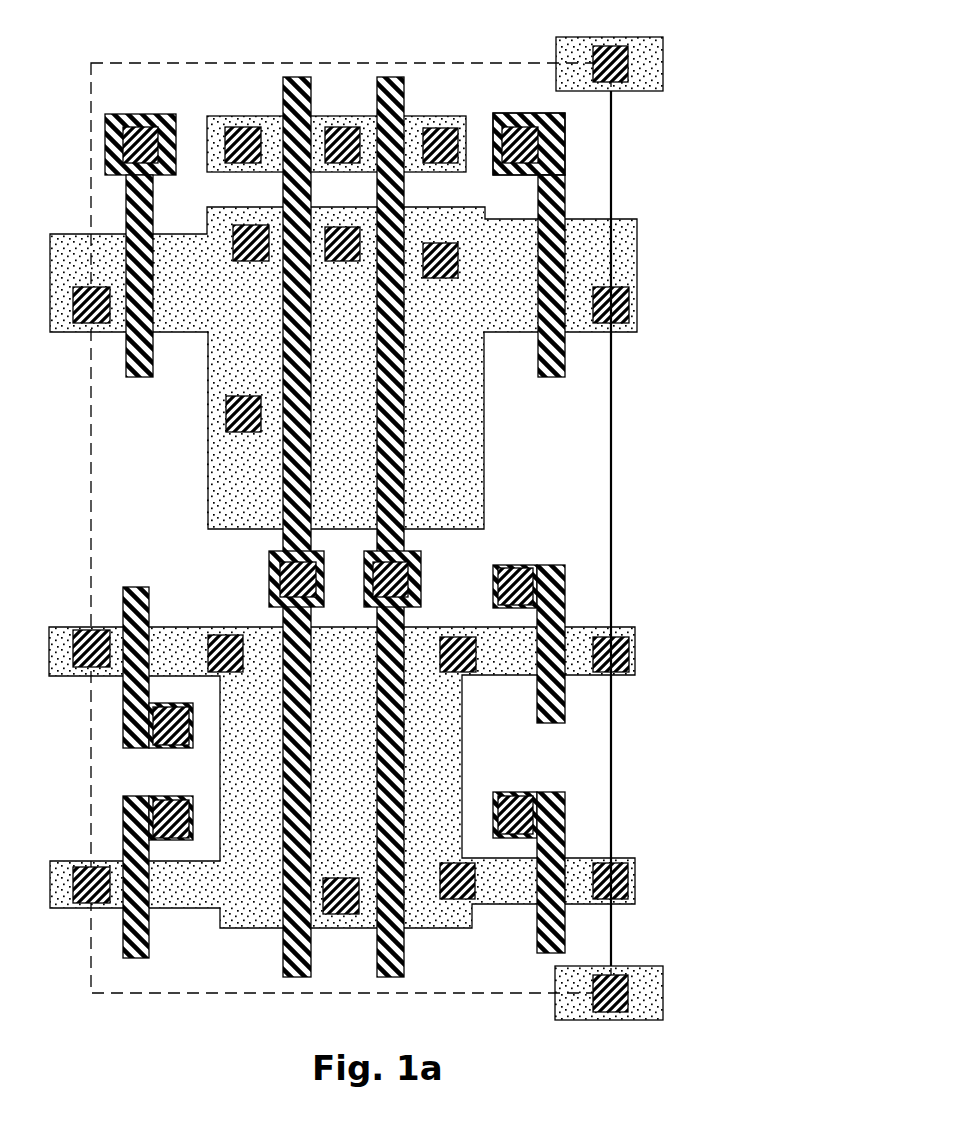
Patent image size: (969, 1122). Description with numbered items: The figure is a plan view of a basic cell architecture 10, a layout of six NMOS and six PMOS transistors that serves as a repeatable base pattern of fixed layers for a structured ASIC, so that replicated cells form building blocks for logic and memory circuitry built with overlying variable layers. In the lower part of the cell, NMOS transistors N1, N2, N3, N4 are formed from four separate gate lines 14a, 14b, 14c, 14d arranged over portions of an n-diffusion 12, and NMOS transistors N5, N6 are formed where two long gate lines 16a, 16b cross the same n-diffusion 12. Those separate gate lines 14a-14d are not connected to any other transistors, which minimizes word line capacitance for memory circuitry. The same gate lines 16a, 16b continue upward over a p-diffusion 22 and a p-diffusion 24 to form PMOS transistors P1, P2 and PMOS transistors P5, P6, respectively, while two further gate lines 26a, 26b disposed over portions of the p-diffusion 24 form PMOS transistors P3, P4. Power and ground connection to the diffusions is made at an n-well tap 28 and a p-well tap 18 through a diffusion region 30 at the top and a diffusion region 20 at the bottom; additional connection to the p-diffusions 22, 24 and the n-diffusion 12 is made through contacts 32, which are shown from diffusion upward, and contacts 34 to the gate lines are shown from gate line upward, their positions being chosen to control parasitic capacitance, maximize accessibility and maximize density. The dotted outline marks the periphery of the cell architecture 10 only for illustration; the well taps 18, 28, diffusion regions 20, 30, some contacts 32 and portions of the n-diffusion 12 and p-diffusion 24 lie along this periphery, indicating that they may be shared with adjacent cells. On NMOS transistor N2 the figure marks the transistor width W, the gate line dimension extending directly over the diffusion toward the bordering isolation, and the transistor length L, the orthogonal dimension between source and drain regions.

The basic cell architecture 10 is at (736, 46).
The n-diffusion 12 is at (440, 716).
The gate line 14a is at (137, 616).
The gate line 14b is at (555, 697).
The gate line 14c is at (137, 875).
The gate line 14d is at (552, 872).
The gate line 16a is at (312, 373).
The gate line 16b is at (404, 380).
The p-well tap 18 is at (637, 963).
The diffusion region 20 is at (662, 993).
The p-diffusion 22 is at (320, 120).
The p-diffusion 24 is at (466, 465).
The gate line 26a is at (153, 276).
The gate line 26b is at (550, 253).
The n-well tap 28 is at (627, 65).
The diffusion region 30 is at (645, 72).
The contacts 32 is at (629, 305).
The contacts 34 is at (540, 144).
The PMOS transistor P1 is at (277, 108).
The PMOS transistor P2 is at (412, 108).
The PMOS transistor P3 is at (118, 223).
The PMOS transistor P4 is at (577, 203).
The PMOS transistor P5 is at (272, 337).
The PMOS transistor P6 is at (428, 333).
The NMOS transistor N1 is at (110, 688).
The NMOS transistor N2 is at (576, 618).
The NMOS transistor N3 is at (107, 847).
The NMOS transistor N4 is at (574, 850).
The NMOS transistor N5 is at (281, 769).
The NMOS transistor N6 is at (410, 752).
The transistor width W is at (530, 629).
The transistor length L is at (563, 664).